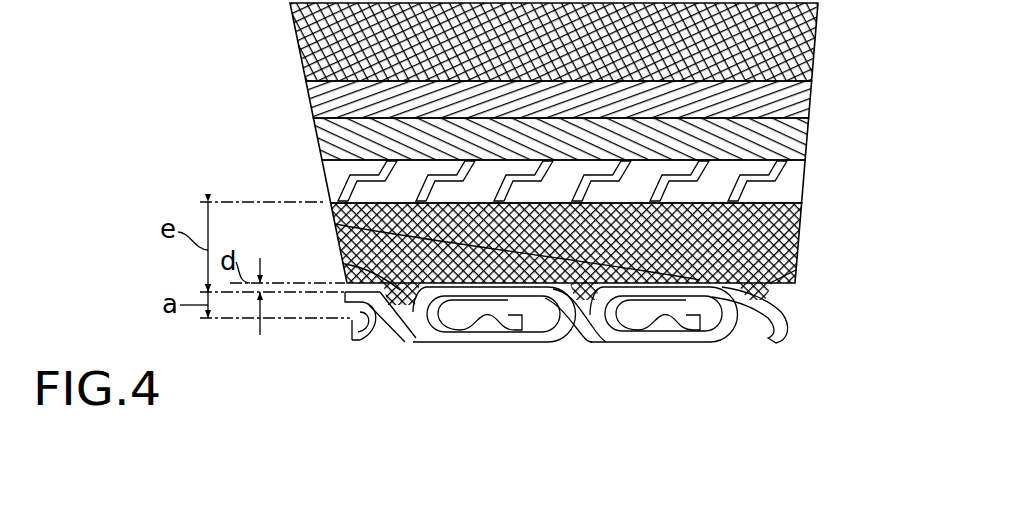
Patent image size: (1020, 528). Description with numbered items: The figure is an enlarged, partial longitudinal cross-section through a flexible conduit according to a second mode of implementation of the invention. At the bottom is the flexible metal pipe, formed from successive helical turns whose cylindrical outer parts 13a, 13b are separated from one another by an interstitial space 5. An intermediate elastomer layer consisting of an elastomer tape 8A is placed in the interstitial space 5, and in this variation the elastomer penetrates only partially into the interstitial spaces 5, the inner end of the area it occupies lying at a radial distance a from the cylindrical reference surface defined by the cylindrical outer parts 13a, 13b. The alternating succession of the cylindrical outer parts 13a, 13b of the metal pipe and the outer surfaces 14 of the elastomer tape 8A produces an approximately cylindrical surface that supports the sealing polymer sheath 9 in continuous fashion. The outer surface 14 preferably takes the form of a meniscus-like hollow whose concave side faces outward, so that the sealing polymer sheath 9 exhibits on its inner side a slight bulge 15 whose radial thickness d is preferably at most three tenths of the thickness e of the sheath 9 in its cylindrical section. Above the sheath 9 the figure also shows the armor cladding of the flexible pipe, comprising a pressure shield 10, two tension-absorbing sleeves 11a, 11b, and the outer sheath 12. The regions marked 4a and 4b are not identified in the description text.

The outer sheath 12 is at (815, 40).
The tension-absorbing sleeve 11b is at (810, 97).
The tension-absorbing sleeve 11a is at (808, 135).
The pressure shield 10 is at (803, 183).
The sealing polymer sheath 9 is at (800, 228).
The bulge 15 is at (335, 224).
The outer surface of the elastomer tape 14 is at (345, 264).
The elastomer tape 8A is at (418, 328).
The first coupling element 4a is at (351, 345).
The second coupling element 4b is at (571, 343).
The cylindrical outer part 13a is at (503, 287).
The cylindrical outer part 13b is at (708, 287).
The interstitial space 5 is at (790, 320).